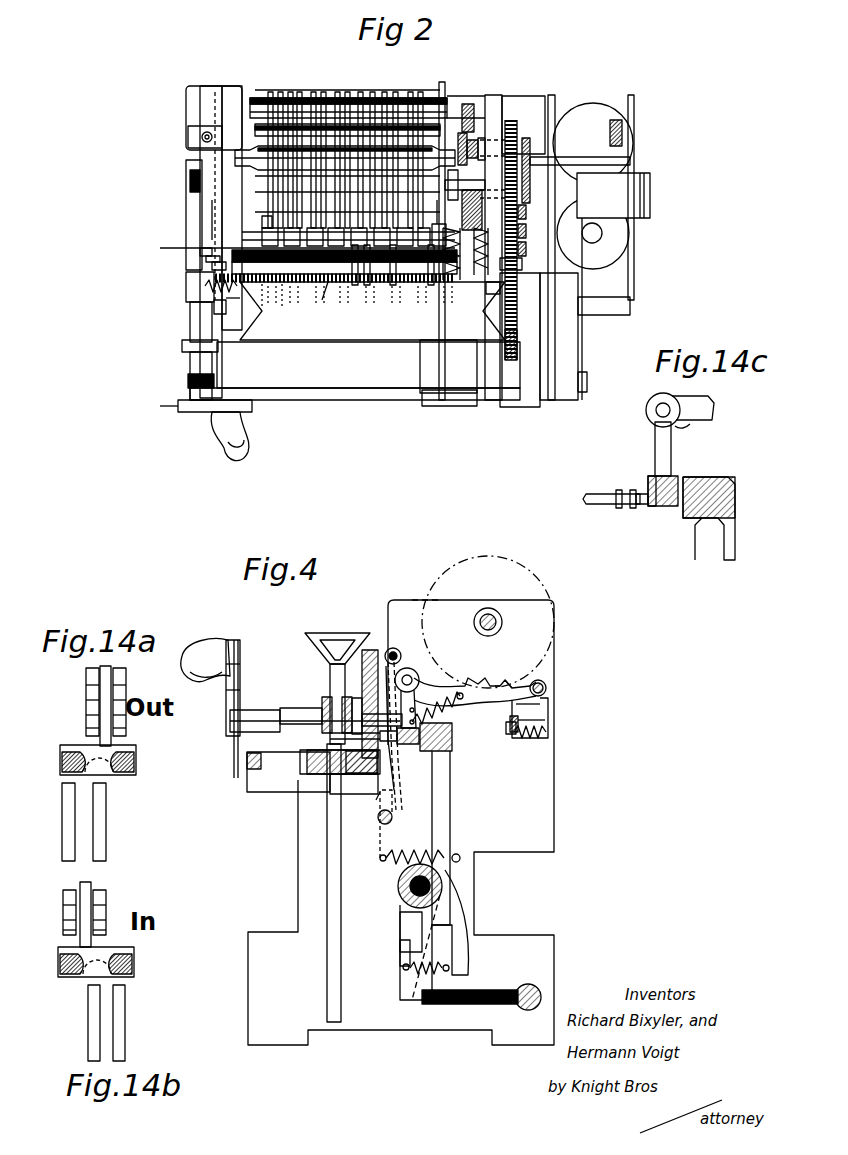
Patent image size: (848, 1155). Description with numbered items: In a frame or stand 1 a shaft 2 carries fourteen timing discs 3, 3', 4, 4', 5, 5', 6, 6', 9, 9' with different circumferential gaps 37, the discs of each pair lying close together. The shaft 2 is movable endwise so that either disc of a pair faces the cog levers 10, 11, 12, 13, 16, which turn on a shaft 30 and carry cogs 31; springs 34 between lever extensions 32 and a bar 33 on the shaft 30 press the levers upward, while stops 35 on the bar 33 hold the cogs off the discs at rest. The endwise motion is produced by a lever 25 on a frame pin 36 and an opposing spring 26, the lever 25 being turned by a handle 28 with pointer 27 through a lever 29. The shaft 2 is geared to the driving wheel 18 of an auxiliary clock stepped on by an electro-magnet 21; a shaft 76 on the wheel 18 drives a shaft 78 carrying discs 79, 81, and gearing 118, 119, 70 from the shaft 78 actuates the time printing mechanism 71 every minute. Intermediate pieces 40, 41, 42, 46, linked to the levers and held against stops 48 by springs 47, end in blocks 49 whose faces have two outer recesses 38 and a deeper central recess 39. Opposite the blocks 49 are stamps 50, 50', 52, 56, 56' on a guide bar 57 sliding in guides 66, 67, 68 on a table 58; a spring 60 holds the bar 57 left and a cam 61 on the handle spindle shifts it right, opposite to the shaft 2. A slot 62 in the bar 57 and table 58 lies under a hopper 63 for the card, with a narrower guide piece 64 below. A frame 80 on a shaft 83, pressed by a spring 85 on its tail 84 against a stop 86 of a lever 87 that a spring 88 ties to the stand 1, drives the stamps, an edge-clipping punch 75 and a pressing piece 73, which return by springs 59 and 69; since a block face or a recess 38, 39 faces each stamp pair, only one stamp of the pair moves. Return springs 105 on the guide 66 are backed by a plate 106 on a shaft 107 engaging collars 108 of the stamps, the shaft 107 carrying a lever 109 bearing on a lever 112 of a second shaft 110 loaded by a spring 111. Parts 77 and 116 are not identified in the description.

In FIG. 2, the frame or stand 1 is at (222, 184).
In FIG. 4, the frame or stand 1 is at (545, 800).
In FIG. 2, the shaft 2 is at (237, 208).
In FIG. 4, the shaft 2 is at (494, 612).
In FIG. 2, the timing disc 3 is at (264, 152).
In FIG. 14A, the timing disc 3 is at (79, 702).
In FIG. 14B, the timing disc 3 is at (55, 912).
In FIG. 2, the timing disc 3' is at (274, 143).
In FIG. 14A, the timing disc 3' is at (134, 702).
In FIG. 14B, the timing disc 3' is at (131, 923).
In FIG. 2, the timing disc 4 is at (290, 159).
In FIG. 2, the timing disc 4' is at (301, 149).
In FIG. 2, the timing disc 5 is at (315, 151).
In FIG. 4, the timing disc 5 is at (488, 611).
In FIG. 2, the timing disc 5' is at (332, 142).
In FIG. 2, the timing disc 6 is at (336, 159).
In FIG. 2, the timing disc 6' is at (353, 149).
In FIG. 2, the timing disc 9 is at (397, 151).
In FIG. 2, the timing disc 9' is at (410, 142).
In FIG. 2, the cog lever 10 is at (262, 233).
In FIG. 2, the cog lever 11 is at (262, 241).
In FIG. 2, the cog lever 12 is at (252, 250).
In FIG. 14C, the cog lever 12 is at (706, 410).
In FIG. 14A, the cog lever 12 is at (100, 720).
In FIG. 14B, the cog lever 12 is at (110, 895).
In FIG. 4, the cog lever 12 is at (490, 698).
In FIG. 2, the cog lever 13 is at (320, 288).
In FIG. 2, the cog lever 16 is at (450, 195).
In FIG. 2, the driving wheel 18 is at (622, 140).
In FIG. 2, the electro-magnet 21 is at (592, 120).
In FIG. 2, the lever 25 is at (212, 213).
In FIG. 2, the spring 26 is at (490, 140).
In FIG. 2, the pointer 27 is at (172, 410).
In FIG. 4, the pointer 27 is at (236, 776).
In FIG. 2, the handle 28 is at (242, 442).
In FIG. 4, the handle 28 is at (208, 646).
In FIG. 2, the lever 29 is at (205, 286).
In FIG. 2, the shaft 30 is at (462, 108).
In FIG. 4, the shaft 30 is at (546, 688).
In FIG. 4, the cog or nib 31 is at (504, 682).
In FIG. 4, the extension 32 is at (548, 712).
In FIG. 2, the bar 33 is at (373, 100).
In FIG. 4, the bar 33 is at (510, 728).
In FIG. 4, the spring 34 is at (530, 736).
In FIG. 4, the stop 35 is at (518, 722).
In FIG. 2, the pin 36 is at (207, 131).
In FIG. 4, the recess or gap 37 is at (496, 682).
In FIG. 14C, the external recess 38 is at (650, 480).
In FIG. 14A, the external recess 38 is at (66, 765).
In FIG. 14B, the external recess 38 is at (62, 966).
In FIG. 14C, the central recess 39 is at (645, 505).
In FIG. 14A, the central recess 39 is at (108, 775).
In FIG. 14B, the central recess 39 is at (84, 974).
In FIG. 2, the intermediate piece 40 is at (200, 252).
In FIG. 2, the intermediate piece 41 is at (206, 258).
In FIG. 2, the intermediate piece 42 is at (212, 265).
In FIG. 14C, the intermediate piece 42 is at (655, 443).
In FIG. 4, the intermediate piece 42 is at (410, 708).
In FIG. 2, the intermediate piece 46 is at (444, 232).
In FIG. 4, the spring 47 is at (446, 708).
In FIG. 4, the stop 48 is at (462, 692).
In FIG. 2, the block 49 is at (266, 224).
In FIG. 14C, the block 49 is at (668, 508).
In FIG. 14A, the block 49 is at (133, 752).
In FIG. 14B, the block 49 is at (70, 953).
In FIG. 4, the block 49 is at (412, 745).
In FIG. 2, the stamp 50 is at (250, 307).
In FIG. 14A, the stamp 50 is at (56, 822).
In FIG. 14B, the stamp 50 is at (76, 1023).
In FIG. 2, the stamp 50' is at (270, 307).
In FIG. 14A, the stamp 50' is at (131, 822).
In FIG. 14B, the stamp 50' is at (145, 1023).
In FIG. 4, the stamp 52 is at (354, 772).
In FIG. 2, the stamp 56 is at (394, 289).
In FIG. 2, the stamp 56' is at (425, 289).
In FIG. 2, the guide bar 57 is at (214, 310).
In FIG. 4, the guide bar 57 is at (322, 712).
In FIG. 2, the table 58 is at (350, 392).
In FIG. 4, the table 58 is at (248, 758).
In FIG. 2, the spring 59 is at (520, 258).
In FIG. 2, the spring 60 is at (192, 298).
In FIG. 2, the cam 61 is at (192, 314).
In FIG. 2, the slot 62 is at (228, 312).
In FIG. 4, the slot 62 is at (318, 718).
In FIG. 2, the hopper 63 is at (294, 338).
In FIG. 4, the hopper 63 is at (336, 636).
In FIG. 4, the guide piece 64 is at (327, 864).
In FIG. 2, the guide bar 66 is at (366, 300).
In FIG. 4, the guide bar 66 is at (378, 650).
In FIG. 4, the guide 67 is at (331, 660).
In FIG. 4, the guide 68 is at (316, 758).
In FIG. 2, the spring 69 is at (478, 275).
In FIG. 2, the gearing 70 is at (539, 340).
In FIG. 2, the time printing mechanism 71 is at (450, 394).
In FIG. 2, the printing or pressing piece 73 is at (466, 346).
In FIG. 2, the stamp or punch 75 is at (500, 288).
In FIG. 2, the shaft 76 is at (595, 160).
In FIG. 2, the gear 77 is at (528, 176).
In FIG. 2, the shaft 78 is at (450, 130).
In FIG. 2, the disc 79 is at (519, 250).
In FIG. 2, the frame 80 is at (398, 205).
In FIG. 14C, the frame 80 is at (710, 478).
In FIG. 4, the frame 80 is at (447, 760).
In FIG. 2, the disc 81 is at (519, 230).
In FIG. 4, the shaft 83 is at (404, 894).
In FIG. 4, the tail or extension 84 is at (462, 920).
In FIG. 4, the spring 85 is at (438, 962).
In FIG. 4, the stop 86 is at (402, 958).
In FIG. 4, the lever 87 is at (408, 928).
In FIG. 4, the spring 88 is at (481, 1004).
In FIG. 4, the spring 105 is at (342, 704).
In FIG. 2, the metal plate 106 is at (355, 290).
In FIG. 4, the metal plate 106 is at (400, 672).
In FIG. 2, the shaft 107 is at (438, 248).
In FIG. 4, the shaft 107 is at (394, 648).
In FIG. 4, the collar 108 is at (402, 790).
In FIG. 4, the lever 109 is at (394, 770).
In FIG. 4, the second shaft 110 is at (381, 822).
In FIG. 4, the spring 111 is at (410, 852).
In FIG. 4, the lever 112 is at (380, 800).
In FIG. 2, the chain 116 is at (512, 125).
In FIG. 2, the gearing 118 is at (519, 211).
In FIG. 2, the gearing 119 is at (526, 332).